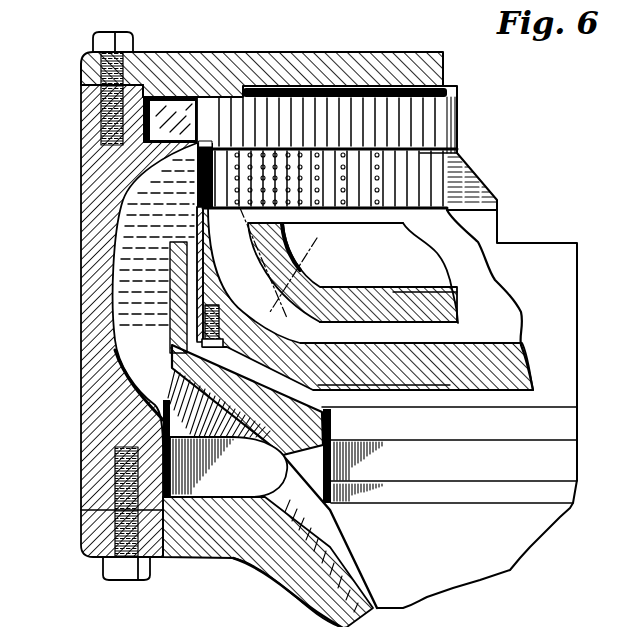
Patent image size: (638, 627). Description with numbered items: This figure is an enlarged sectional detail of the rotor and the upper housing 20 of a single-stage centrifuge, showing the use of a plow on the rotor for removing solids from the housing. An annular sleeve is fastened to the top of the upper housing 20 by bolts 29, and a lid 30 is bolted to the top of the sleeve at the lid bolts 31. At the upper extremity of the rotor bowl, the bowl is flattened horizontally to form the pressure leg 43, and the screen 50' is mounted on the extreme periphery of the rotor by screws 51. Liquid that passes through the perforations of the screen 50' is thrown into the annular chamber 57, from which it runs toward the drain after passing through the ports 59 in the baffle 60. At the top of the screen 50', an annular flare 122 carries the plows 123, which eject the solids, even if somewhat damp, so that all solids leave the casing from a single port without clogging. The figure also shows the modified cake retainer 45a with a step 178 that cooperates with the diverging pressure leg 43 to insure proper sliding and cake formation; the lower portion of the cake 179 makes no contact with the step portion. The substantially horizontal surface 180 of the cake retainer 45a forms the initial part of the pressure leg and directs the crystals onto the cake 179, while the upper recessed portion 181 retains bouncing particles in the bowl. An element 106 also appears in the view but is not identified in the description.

The upper housing 20 is at (316, 608).
The bolts 29 is at (103, 570).
The lid 30 is at (441, 66).
The lid bolts 31 is at (93, 42).
The pressure leg 43 is at (368, 298).
The cake retainer 45a is at (412, 273).
The screen 50' is at (477, 283).
The screws 51 is at (204, 341).
The annular chamber 57 is at (228, 467).
The ports 59 is at (335, 518).
The baffle 60 is at (273, 424).
The member 106 is at (145, 623).
The annular flare 122 is at (180, 147).
The plows 123 is at (160, 120).
The step 178 is at (310, 324).
The cake 179 is at (276, 300).
The substantially horizontal surface 180 is at (403, 323).
The upper recessed portion 181 is at (284, 252).